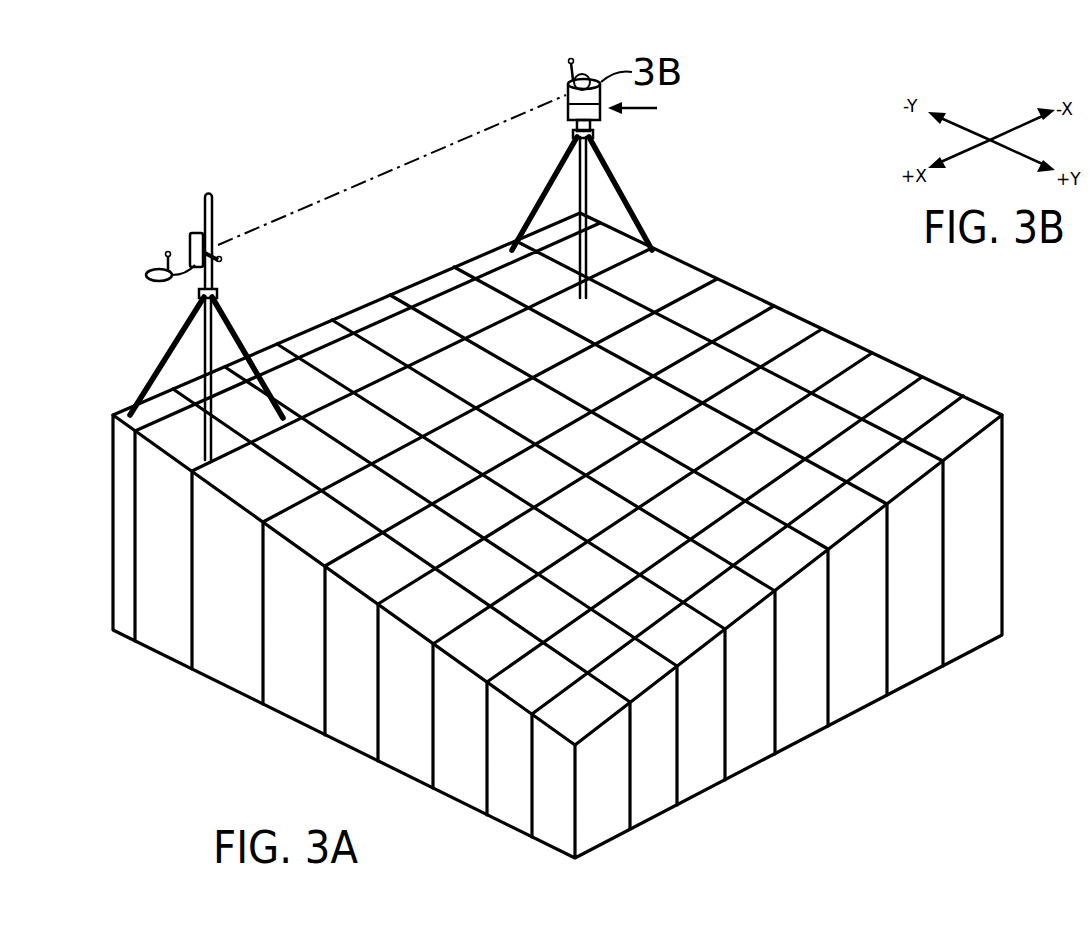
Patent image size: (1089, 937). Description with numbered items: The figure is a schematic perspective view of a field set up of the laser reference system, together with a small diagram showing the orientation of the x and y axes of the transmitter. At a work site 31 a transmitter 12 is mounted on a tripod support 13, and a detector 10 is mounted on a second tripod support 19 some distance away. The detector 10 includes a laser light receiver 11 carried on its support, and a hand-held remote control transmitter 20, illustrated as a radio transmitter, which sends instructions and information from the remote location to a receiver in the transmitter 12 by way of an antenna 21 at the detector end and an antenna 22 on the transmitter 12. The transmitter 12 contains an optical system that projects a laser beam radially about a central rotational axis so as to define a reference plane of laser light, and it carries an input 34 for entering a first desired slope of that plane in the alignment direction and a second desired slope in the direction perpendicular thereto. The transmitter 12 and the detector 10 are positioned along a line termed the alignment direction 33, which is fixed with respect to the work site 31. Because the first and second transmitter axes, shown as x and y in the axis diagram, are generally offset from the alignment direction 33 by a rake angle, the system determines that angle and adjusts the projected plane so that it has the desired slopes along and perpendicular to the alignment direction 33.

The detector 10 is at (192, 185).
The laser light receiver 11 is at (200, 237).
The transmitter 12 is at (640, 117).
The tripod support 13 is at (638, 197).
The tripod support 19 is at (230, 322).
The hand-held remote control transmitter 20 is at (147, 279).
The antenna 21 is at (165, 257).
The antenna 22 is at (573, 58).
The work site 31 is at (186, 388).
The alignment direction 33 is at (449, 134).
The input 34 is at (603, 119).